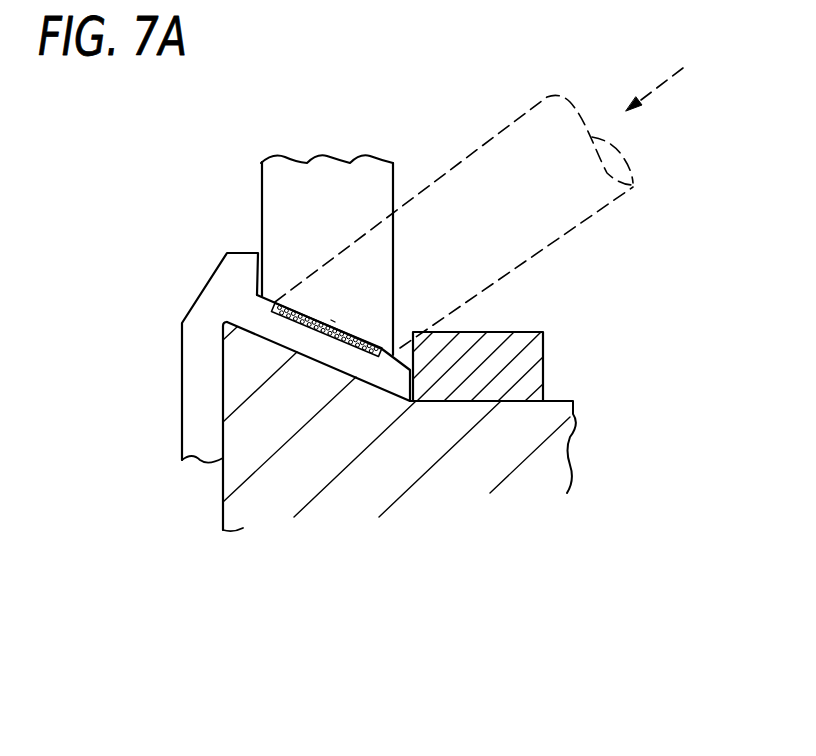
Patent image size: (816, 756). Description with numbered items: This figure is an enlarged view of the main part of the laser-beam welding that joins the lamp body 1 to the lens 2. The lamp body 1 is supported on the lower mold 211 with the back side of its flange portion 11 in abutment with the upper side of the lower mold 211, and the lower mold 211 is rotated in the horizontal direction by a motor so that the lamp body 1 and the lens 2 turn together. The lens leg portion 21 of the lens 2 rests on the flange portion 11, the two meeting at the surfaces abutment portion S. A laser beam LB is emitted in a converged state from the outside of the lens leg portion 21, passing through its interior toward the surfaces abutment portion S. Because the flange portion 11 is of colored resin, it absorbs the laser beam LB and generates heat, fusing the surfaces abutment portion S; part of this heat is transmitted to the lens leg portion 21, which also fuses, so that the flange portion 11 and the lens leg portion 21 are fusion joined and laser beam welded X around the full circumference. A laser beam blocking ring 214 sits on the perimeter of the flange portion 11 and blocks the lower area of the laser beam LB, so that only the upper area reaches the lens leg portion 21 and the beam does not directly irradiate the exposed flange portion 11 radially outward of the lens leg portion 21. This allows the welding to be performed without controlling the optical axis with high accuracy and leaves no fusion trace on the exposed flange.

The lamp body 1 is at (277, 392).
The flange portion 11 is at (374, 366).
The lens 2 is at (296, 235).
The lens leg portion 21 is at (272, 203).
The lower mold 211 is at (552, 473).
The laser beam blocking ring 214 is at (533, 378).
The surfaces abutment portion S is at (267, 302).
The laser beam welded portion X is at (333, 322).
The laser beam LB is at (568, 243).